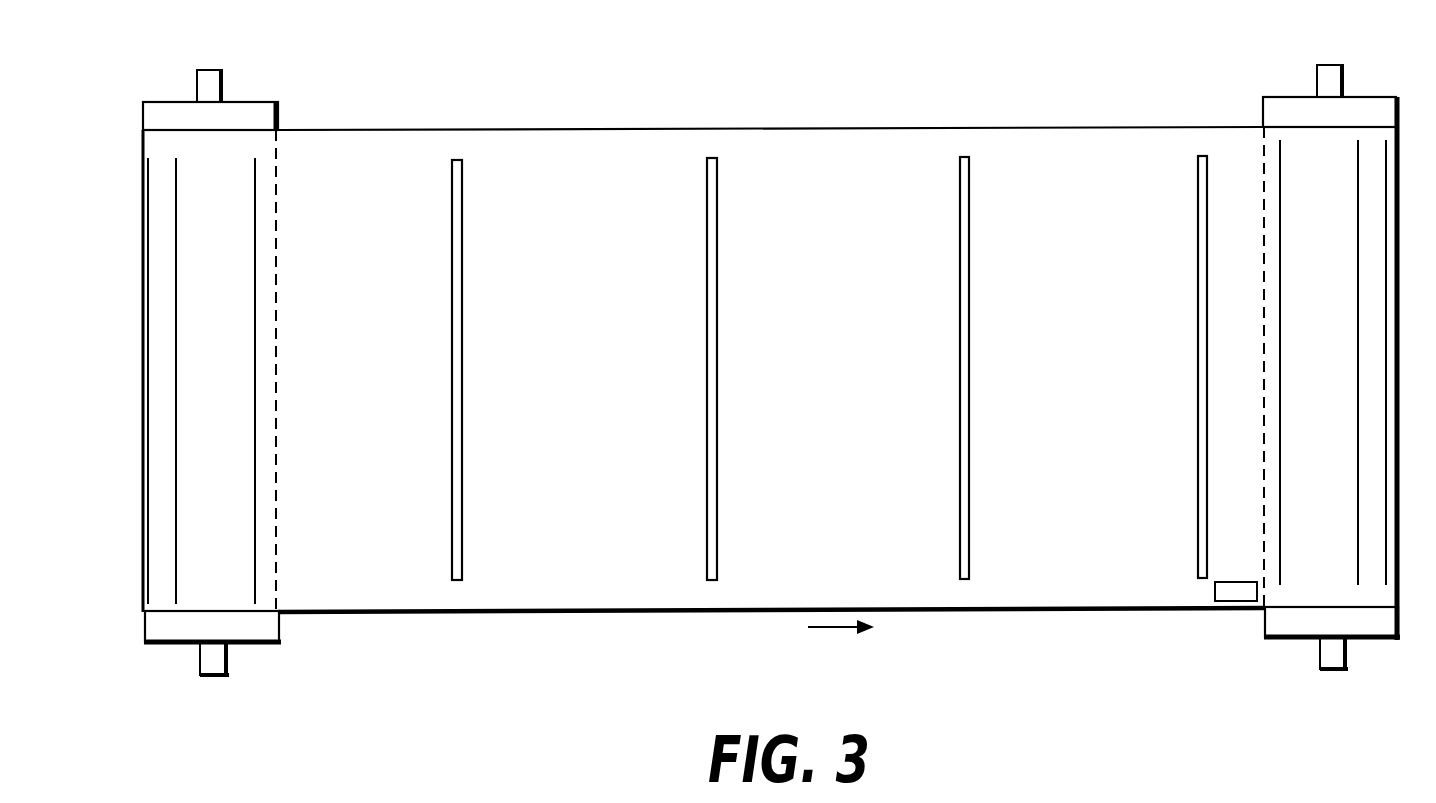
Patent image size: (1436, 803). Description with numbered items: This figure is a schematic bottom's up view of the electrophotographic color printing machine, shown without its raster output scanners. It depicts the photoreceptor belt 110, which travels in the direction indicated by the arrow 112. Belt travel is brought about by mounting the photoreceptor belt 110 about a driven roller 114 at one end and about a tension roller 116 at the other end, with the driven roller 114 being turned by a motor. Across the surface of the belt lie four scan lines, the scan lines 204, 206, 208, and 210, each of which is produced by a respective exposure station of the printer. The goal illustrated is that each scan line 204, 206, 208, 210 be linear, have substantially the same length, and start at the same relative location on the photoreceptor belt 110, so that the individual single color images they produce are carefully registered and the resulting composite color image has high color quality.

The photoreceptor belt 110 is at (575, 128).
The arrow 112 is at (840, 628).
The driven roller 114 is at (1377, 100).
The tension roller 116 is at (254, 101).
The scan line 204 is at (452, 258).
The scan line 206 is at (707, 257).
The scan line 208 is at (961, 257).
The scan line 210 is at (1201, 256).